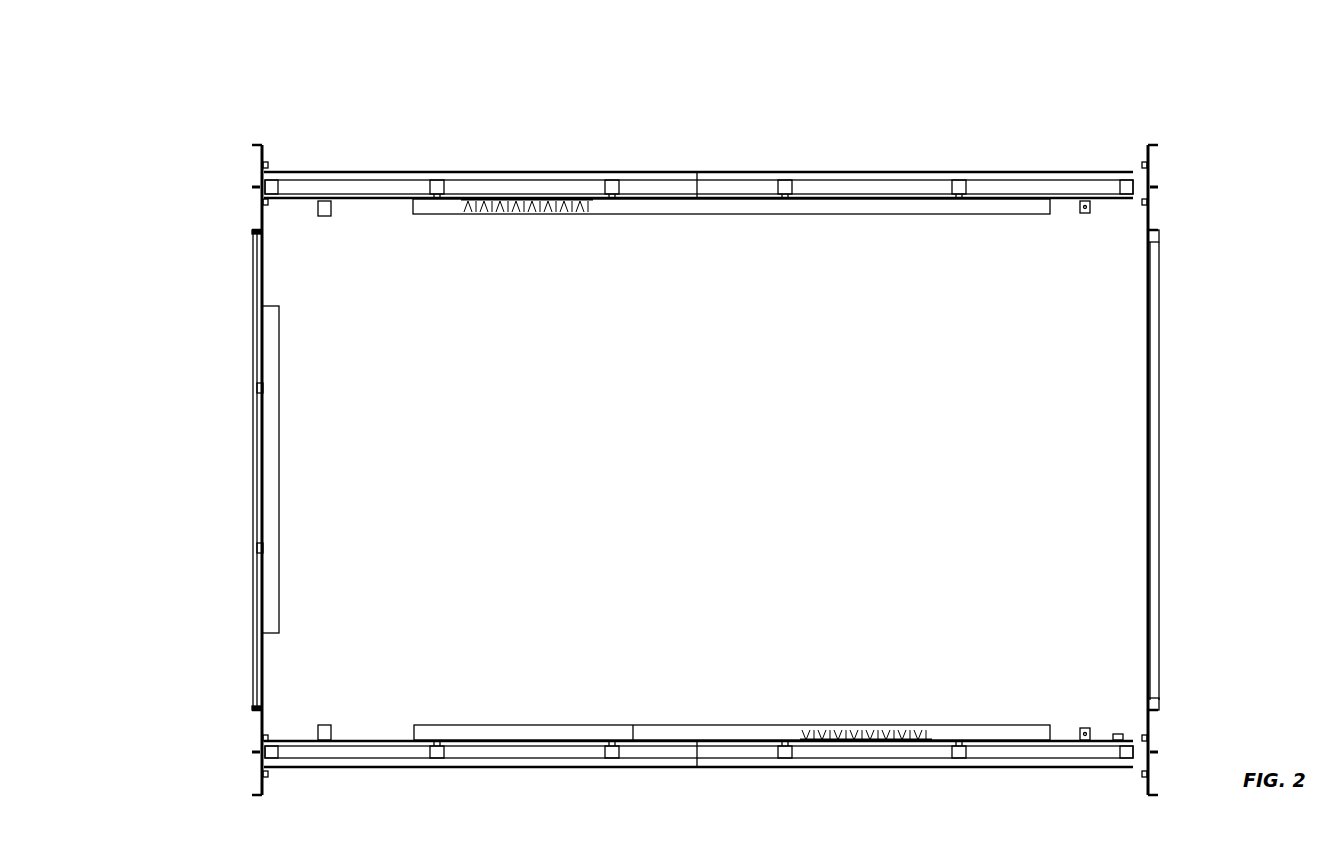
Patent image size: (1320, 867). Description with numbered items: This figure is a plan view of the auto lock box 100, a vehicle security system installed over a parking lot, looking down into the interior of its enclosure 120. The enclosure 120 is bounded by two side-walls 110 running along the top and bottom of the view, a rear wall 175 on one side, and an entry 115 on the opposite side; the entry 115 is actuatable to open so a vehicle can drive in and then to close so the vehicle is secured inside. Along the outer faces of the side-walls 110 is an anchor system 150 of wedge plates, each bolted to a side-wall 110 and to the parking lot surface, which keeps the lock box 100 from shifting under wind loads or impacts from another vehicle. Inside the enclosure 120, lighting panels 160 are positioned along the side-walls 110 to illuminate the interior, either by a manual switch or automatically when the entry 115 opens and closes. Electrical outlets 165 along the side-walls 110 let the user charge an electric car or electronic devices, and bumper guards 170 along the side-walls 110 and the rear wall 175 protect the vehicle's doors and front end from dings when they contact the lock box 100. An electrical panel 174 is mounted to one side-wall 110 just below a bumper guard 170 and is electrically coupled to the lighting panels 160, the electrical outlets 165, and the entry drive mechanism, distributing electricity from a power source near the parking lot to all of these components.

The vehicle security system 100 is at (306, 78).
The side-walls 110 is at (560, 172).
The entry 115 is at (1162, 380).
The enclosure 120 is at (730, 480).
The anchor system 150 is at (1084, 216).
The lighting panels 160 is at (500, 210).
The electrical outlets 165 is at (325, 218).
The bumper guards 170 is at (838, 216).
The electrical panel 174 is at (622, 728).
The rear wall 175 is at (252, 301).